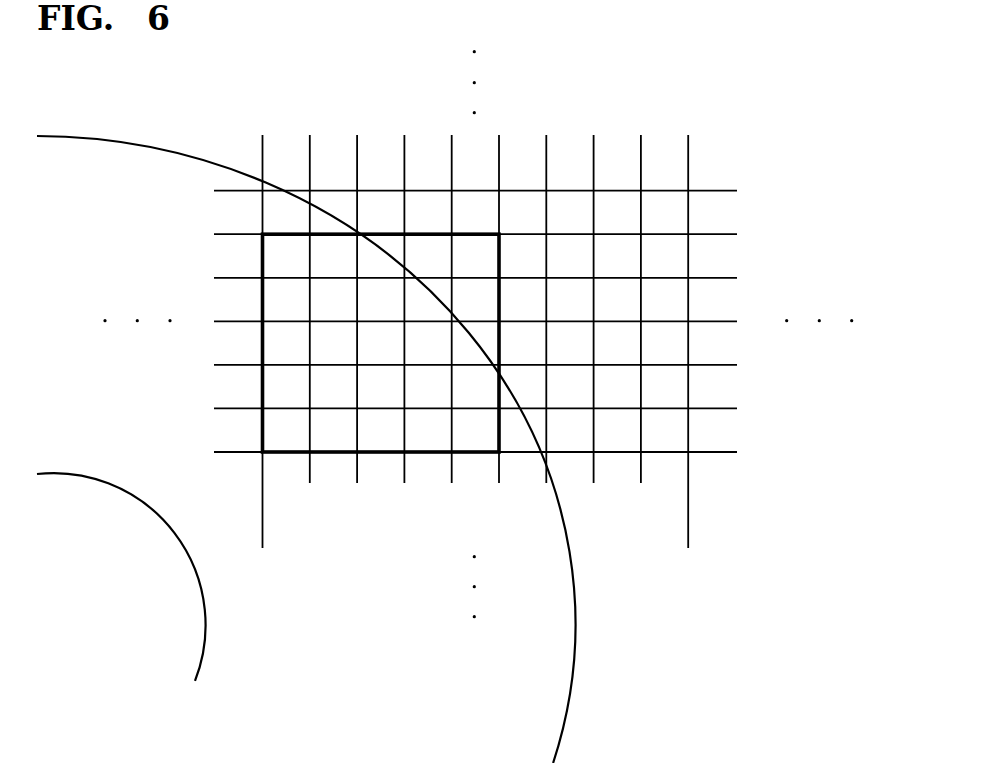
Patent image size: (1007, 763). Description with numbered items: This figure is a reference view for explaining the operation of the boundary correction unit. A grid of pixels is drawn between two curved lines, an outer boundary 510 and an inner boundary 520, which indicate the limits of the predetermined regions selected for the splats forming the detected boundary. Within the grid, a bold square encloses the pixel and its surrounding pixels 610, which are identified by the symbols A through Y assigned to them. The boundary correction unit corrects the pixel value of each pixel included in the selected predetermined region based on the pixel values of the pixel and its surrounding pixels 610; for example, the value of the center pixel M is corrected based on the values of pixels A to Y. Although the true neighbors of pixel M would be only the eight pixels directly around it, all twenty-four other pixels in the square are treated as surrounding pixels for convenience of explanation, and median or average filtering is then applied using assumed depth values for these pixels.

The outer boundary 510 is at (577, 646).
The inner boundary 520 is at (185, 553).
The pixel and its surrounding pixels 610 is at (386, 454).